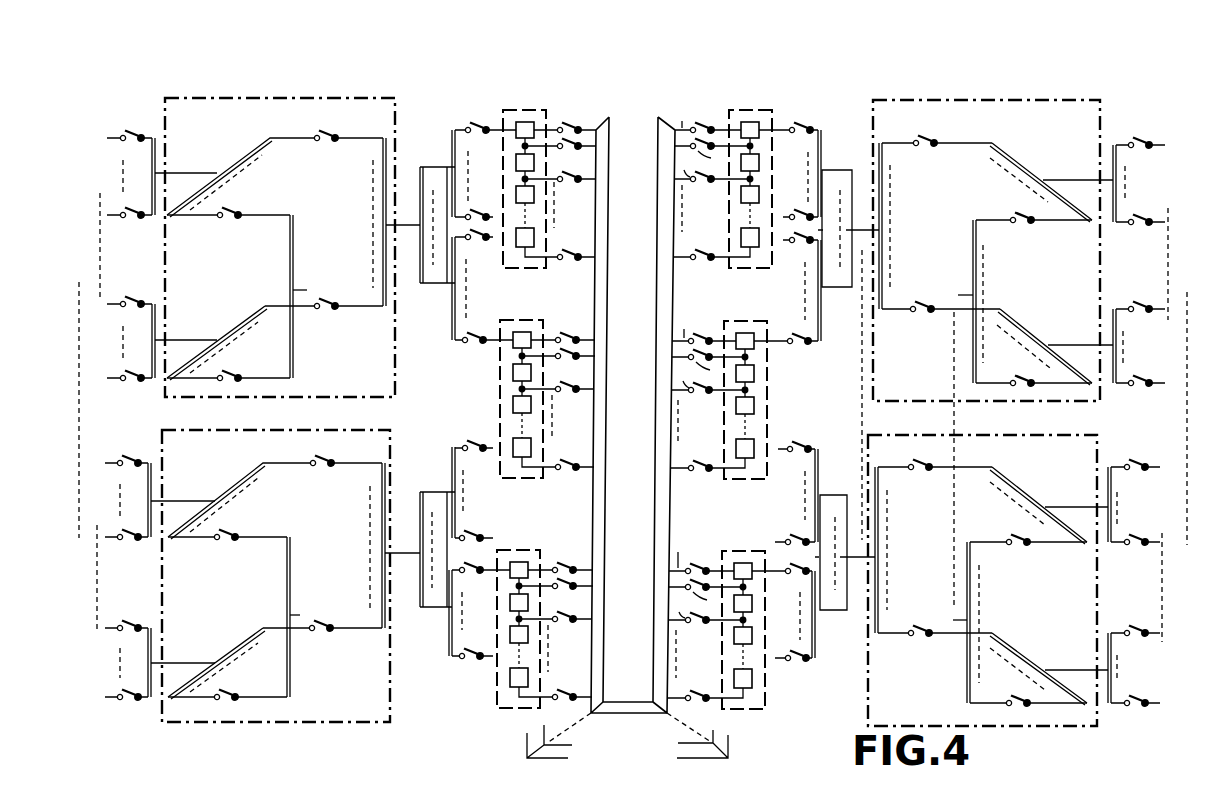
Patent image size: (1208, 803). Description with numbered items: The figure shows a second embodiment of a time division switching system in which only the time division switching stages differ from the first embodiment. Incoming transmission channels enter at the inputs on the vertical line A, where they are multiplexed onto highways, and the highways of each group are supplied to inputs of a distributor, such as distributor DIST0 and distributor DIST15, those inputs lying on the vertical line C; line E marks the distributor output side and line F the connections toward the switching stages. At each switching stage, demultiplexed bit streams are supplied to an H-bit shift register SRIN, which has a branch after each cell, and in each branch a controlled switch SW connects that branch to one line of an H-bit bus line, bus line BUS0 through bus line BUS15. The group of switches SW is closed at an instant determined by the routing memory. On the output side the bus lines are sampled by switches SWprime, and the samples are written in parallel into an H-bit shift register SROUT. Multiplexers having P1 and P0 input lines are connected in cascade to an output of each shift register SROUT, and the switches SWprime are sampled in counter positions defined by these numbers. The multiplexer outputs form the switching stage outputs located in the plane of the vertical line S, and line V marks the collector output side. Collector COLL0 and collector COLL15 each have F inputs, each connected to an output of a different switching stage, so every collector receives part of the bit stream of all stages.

The vertical line of switching system inputs A is at (117, 120).
The vertical line of distributor inputs C is at (185, 157).
The distributor output switch E is at (357, 122).
The number of collector inputs F is at (403, 207).
The distributor DIST0 is at (285, 93).
The distributor DIST15 is at (305, 427).
The H-bit input shift register SRIN is at (527, 108).
The switch in channel SW is at (566, 124).
The H-bit bus line BUS0 is at (642, 707).
The H-bit bus line BUS15 is at (722, 743).
The H-bit output shift register SROUT is at (749, 110).
The switch connected to bus line SWprime is at (790, 125).
The number of input lines of cascaded multiplexer P0 is at (788, 403).
The number of input lines of multiplexer P1 is at (847, 390).
The vertical line of switching stage outputs S is at (870, 218).
The collector output connection V is at (1082, 160).
The collector COLL0 is at (1047, 93).
The collector COLL15 is at (1048, 432).